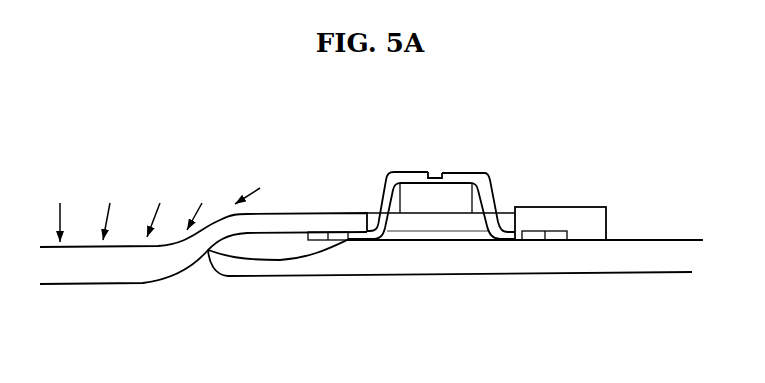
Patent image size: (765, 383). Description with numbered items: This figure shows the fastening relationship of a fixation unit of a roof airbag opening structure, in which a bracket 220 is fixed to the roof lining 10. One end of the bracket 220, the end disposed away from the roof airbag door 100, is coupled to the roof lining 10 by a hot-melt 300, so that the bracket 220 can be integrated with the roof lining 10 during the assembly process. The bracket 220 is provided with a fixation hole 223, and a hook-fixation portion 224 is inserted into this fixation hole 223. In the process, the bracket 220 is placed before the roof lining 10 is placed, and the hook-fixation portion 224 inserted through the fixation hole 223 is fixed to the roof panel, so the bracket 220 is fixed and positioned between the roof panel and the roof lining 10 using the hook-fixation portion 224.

The roof lining 10 is at (417, 267).
The roof airbag door 100 is at (113, 268).
The bracket 220 is at (490, 197).
The fixation hole 223 is at (440, 178).
The hook-fixation portion 224 is at (412, 195).
The hot-melt 300 is at (583, 220).